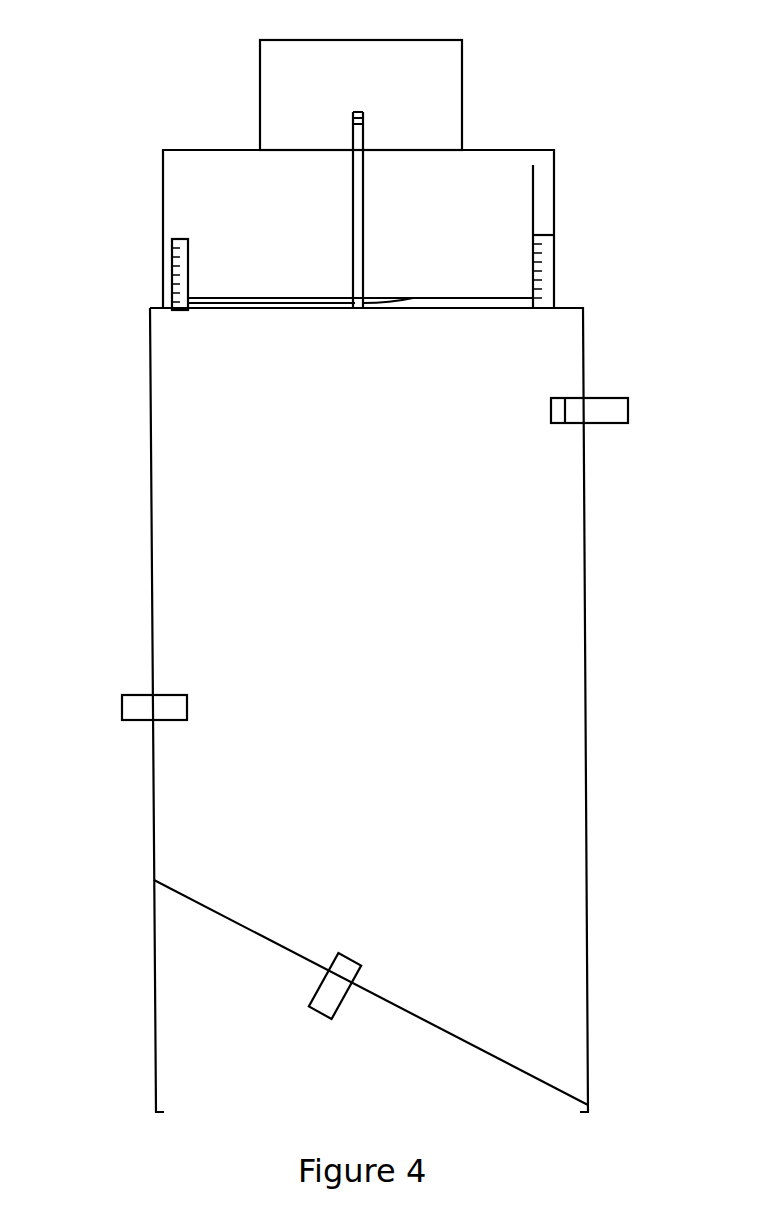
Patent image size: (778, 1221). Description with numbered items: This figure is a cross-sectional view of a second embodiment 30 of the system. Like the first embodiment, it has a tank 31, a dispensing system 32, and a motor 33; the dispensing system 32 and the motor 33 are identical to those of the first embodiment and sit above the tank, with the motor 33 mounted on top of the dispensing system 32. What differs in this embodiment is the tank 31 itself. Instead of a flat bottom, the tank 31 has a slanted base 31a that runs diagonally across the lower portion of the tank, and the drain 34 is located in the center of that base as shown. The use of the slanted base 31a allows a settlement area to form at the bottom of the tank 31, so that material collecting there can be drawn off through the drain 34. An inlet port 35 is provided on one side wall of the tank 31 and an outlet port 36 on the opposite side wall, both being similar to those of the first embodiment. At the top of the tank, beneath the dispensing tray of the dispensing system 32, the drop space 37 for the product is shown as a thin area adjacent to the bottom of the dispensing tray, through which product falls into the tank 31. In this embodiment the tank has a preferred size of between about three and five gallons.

The second embodiment 30 is at (110, 548).
The tank 31 is at (573, 647).
The slanted base 31a is at (498, 1057).
The dispensing system 32 is at (153, 262).
The motor 33 is at (260, 77).
The drain 34 is at (354, 942).
The inlet port 35 is at (180, 692).
The outlet port 36 is at (613, 432).
The drop space 37 is at (440, 260).